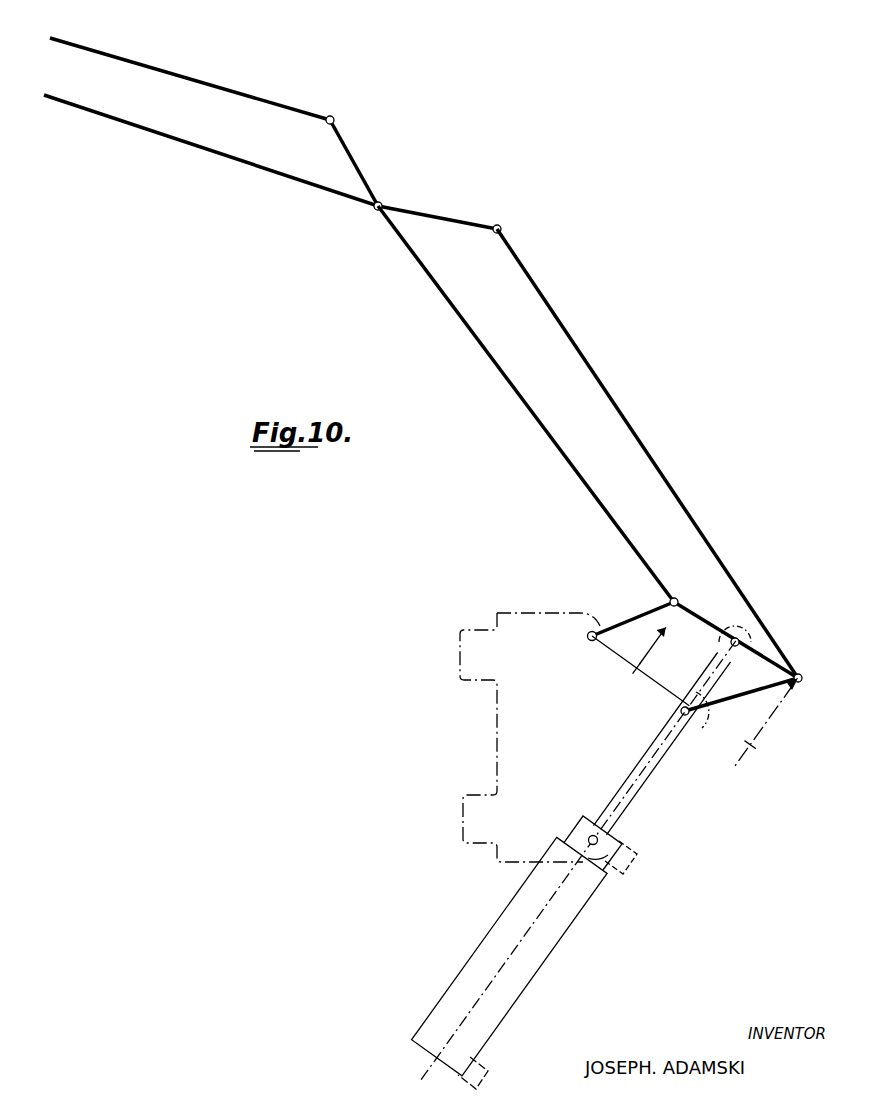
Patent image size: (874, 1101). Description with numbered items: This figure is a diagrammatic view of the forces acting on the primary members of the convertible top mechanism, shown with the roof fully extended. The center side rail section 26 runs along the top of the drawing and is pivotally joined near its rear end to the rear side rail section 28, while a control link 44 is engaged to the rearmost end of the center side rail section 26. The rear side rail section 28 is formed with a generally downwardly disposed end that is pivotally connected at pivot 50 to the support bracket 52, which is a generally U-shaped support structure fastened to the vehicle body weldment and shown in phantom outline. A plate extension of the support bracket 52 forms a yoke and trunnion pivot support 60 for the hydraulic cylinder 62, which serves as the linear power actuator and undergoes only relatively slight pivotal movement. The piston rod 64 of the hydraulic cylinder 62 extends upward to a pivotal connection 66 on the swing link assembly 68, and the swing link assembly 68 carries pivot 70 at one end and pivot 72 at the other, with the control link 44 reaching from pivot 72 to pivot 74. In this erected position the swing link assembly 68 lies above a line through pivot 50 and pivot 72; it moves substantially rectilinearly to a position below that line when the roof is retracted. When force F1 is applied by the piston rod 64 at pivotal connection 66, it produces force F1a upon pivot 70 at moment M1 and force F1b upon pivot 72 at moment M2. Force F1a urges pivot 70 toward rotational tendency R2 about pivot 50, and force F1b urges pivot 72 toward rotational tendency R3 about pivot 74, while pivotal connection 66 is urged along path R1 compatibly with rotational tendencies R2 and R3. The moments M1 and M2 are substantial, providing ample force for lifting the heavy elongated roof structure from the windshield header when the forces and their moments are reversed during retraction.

The center side rail section 26 is at (283, 176).
The rear side rail section 28 is at (506, 377).
The control link 44 is at (576, 346).
The pivot 50 is at (588, 633).
The support bracket 52 is at (540, 733).
The yoke and trunnion pivot support 60 is at (597, 845).
The hydraulic cylinder 62 is at (572, 925).
The piston rod 64 is at (661, 762).
The pivotal connection 66 is at (741, 636).
The swing link assembly 68 is at (700, 619).
The pivot 70 is at (677, 599).
The pivot 72 is at (803, 681).
The pivot 74 is at (688, 716).
The path R1 is at (735, 642).
The rotational tendency R2 is at (674, 602).
The rotational tendency R3 is at (798, 678).
The force F1 is at (729, 650).
The force F1a is at (640, 666).
The force F1b is at (766, 735).
The moment M1 is at (636, 667).
The moment M2 is at (749, 758).